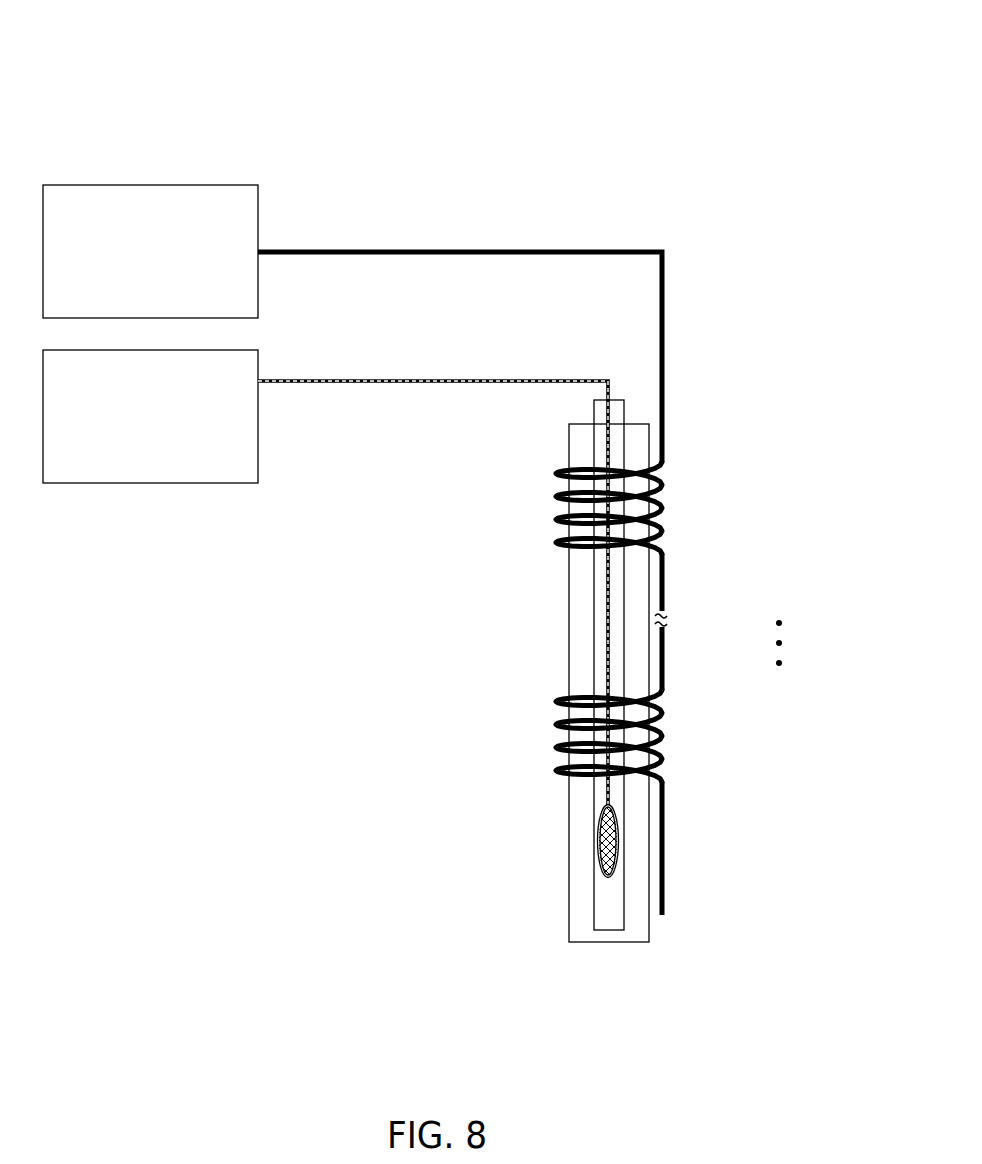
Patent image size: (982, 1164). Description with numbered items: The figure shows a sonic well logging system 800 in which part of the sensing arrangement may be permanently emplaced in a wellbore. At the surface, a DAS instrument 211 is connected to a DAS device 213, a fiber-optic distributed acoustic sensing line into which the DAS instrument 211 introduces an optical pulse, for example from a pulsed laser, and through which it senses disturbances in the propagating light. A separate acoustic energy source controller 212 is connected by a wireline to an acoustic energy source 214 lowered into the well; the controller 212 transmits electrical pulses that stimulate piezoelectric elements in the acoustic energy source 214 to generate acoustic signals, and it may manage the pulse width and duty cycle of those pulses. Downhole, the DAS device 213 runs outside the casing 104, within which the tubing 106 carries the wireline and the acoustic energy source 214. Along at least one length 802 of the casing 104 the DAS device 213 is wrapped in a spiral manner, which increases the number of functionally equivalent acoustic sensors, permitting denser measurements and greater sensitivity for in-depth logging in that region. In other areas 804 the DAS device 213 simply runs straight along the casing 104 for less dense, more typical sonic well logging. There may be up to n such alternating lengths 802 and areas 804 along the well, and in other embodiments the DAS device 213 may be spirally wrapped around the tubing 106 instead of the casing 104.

The sonic well logging system 800 is at (541, 88).
The DAS instrument 211 is at (168, 270).
The acoustic energy source controller 212 is at (168, 430).
The DAS device 213 is at (664, 304).
The casing 104 is at (569, 448).
The tubing 106 is at (601, 593).
The acoustic energy source 214 is at (598, 845).
The length for in-depth sonic well logging 802 is at (688, 445).
The area for typical sonic well logging 804 is at (688, 550).